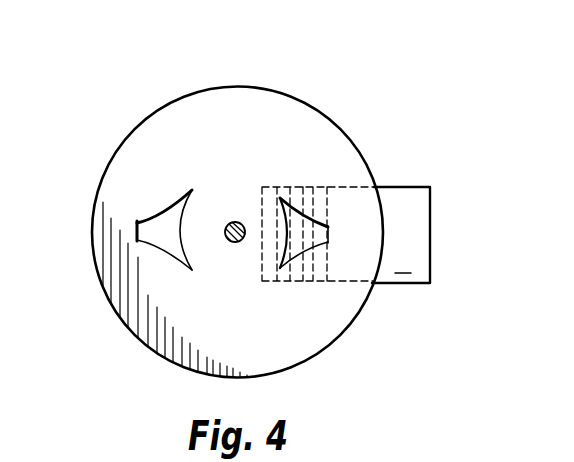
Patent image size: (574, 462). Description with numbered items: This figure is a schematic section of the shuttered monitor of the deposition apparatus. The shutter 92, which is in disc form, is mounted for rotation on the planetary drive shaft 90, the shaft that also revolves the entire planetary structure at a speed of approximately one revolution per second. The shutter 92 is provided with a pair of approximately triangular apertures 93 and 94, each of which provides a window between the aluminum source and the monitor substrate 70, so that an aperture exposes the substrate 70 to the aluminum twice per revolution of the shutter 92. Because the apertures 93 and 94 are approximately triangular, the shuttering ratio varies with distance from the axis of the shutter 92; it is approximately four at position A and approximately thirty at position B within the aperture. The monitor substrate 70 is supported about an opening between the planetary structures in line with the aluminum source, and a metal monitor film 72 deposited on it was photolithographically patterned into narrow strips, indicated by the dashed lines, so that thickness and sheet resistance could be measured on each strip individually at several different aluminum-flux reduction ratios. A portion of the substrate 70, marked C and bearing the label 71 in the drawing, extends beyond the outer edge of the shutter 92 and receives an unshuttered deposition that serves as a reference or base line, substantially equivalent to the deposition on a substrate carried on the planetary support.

The monitor substrate 70 is at (412, 187).
The signal output (C) 71 is at (403, 261).
The metal monitor film 72 is at (325, 267).
The planetary drive shaft 90 is at (233, 222).
The shutter 92 is at (327, 115).
The triangular aperture 93 is at (167, 252).
The triangular aperture 94 is at (312, 243).
The position A is at (170, 232).
The position B is at (148, 222).